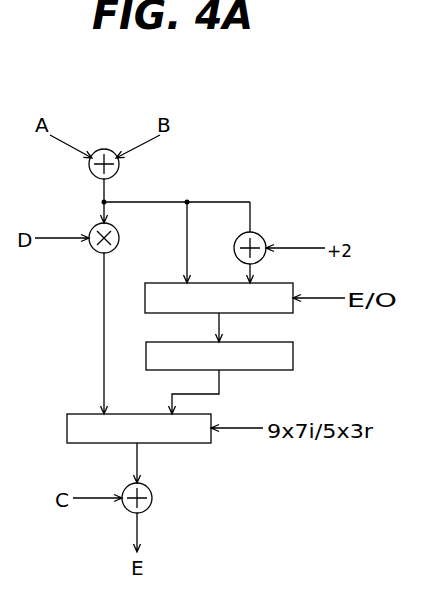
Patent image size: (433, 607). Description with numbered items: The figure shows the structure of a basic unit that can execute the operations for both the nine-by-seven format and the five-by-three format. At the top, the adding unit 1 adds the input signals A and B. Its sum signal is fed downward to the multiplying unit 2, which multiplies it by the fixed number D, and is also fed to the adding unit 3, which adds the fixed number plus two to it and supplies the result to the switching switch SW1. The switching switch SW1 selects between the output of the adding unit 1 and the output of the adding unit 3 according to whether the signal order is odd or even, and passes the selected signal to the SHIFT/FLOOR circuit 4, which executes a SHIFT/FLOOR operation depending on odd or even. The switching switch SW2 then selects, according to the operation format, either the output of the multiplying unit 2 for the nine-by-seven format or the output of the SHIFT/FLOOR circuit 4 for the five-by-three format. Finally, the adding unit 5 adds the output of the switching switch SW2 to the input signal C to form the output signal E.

The adding unit 1 is at (119, 171).
The multiplying unit 2 is at (119, 238).
The adding unit 3 is at (265, 237).
The SHIFT/FLOOR circuit 4 is at (293, 356).
The adding unit 5 is at (152, 498).
The switching switch SW1 is at (275, 285).
The switching switch SW2 is at (207, 415).